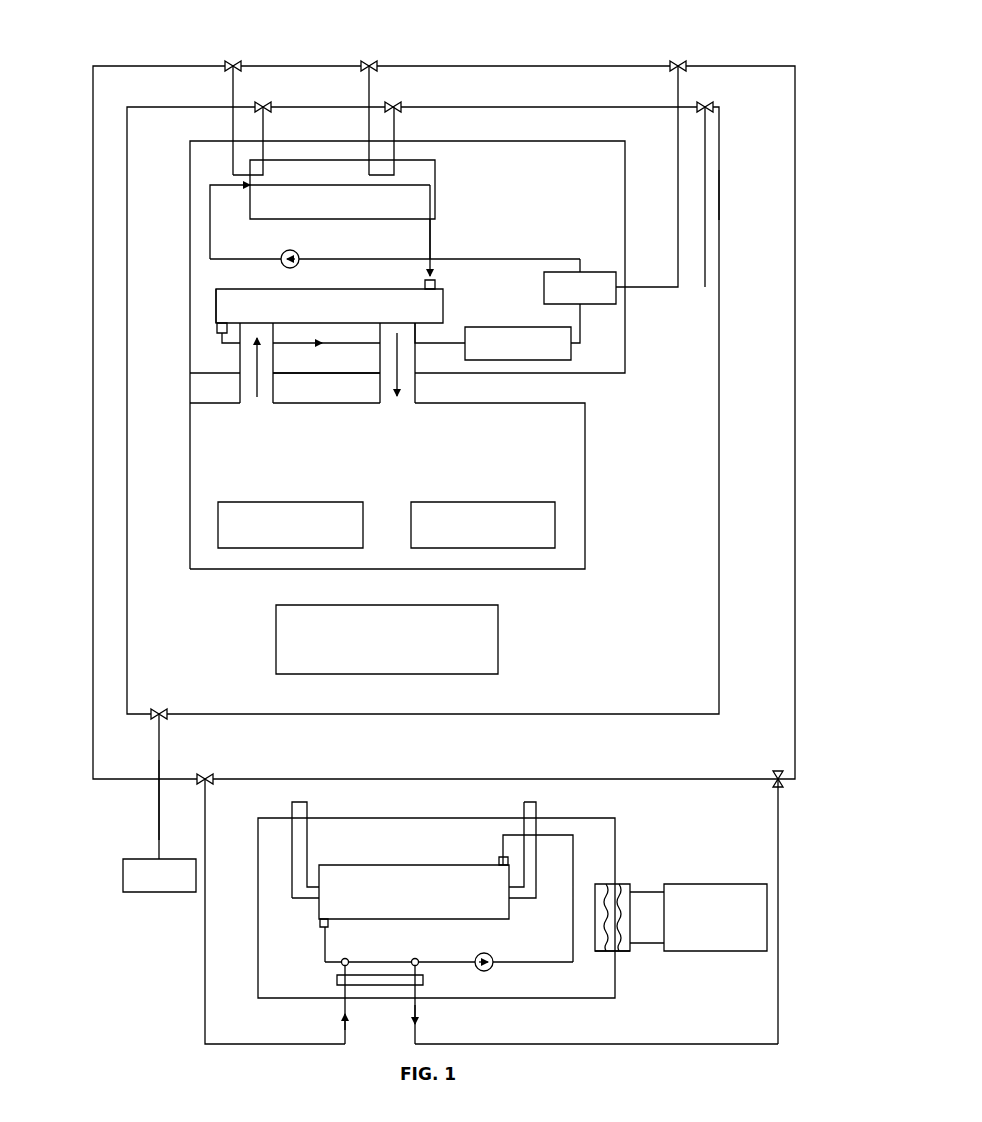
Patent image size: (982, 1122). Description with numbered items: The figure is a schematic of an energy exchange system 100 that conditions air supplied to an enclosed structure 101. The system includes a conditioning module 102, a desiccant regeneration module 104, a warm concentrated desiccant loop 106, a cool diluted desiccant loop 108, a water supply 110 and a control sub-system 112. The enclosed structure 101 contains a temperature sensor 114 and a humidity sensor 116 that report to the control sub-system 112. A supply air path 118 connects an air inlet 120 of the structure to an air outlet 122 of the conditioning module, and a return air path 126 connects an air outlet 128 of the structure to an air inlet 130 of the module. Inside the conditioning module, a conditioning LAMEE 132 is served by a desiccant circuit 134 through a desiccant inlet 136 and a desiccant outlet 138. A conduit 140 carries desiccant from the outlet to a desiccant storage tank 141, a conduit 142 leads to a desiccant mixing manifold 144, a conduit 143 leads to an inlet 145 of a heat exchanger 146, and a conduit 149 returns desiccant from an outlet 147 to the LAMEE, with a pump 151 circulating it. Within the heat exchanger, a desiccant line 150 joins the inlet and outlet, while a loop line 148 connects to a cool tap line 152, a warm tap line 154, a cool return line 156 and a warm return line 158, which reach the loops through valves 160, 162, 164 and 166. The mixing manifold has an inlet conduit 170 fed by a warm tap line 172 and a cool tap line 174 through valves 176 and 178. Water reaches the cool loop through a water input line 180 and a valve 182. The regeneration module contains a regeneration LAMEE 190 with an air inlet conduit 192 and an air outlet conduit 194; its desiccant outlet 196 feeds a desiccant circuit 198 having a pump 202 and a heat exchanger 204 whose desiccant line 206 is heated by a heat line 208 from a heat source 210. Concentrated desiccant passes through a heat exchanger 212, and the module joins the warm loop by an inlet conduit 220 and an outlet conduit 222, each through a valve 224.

The energy exchange system 100 is at (155, 52).
The enclosed structure 101 is at (407, 355).
The conditioning module 102 is at (395, 233).
The desiccant regeneration module 104 is at (436, 908).
The warm concentrated desiccant loop 106 is at (797, 742).
The cool diluted desiccant loop 108 is at (655, 717).
The water supply 110 is at (158, 893).
The control sub-system 112 is at (499, 640).
The temperature sensor 114 is at (290, 502).
The humidity sensor 116 is at (483, 502).
The supply air path 118 is at (420, 355).
The air inlet 120 is at (410, 405).
The air outlet 122 is at (415, 322).
The return air path 126 is at (240, 355).
The air outlet 128 is at (265, 405).
The air inlet 130 is at (258, 321).
The conditioning LAMEE 132 is at (329, 306).
The desiccant circuit 134 is at (357, 260).
The desiccant inlet 136 is at (440, 285).
The desiccant outlet 138 is at (217, 330).
The conduit 140 is at (313, 344).
The desiccant storage tank 141 is at (570, 361).
The conduit 142 is at (583, 322).
The conduit 143 is at (574, 258).
The desiccant mixing manifold 144 is at (587, 271).
The inlet 145 is at (243, 193).
The heat exchanger 146 is at (432, 224).
The outlet 147 is at (433, 228).
The loop line 148 is at (403, 187).
The conduit 149 is at (428, 234).
The desiccant line 150 is at (318, 186).
The pump 151 is at (296, 253).
The cool tap line 152 is at (262, 150).
The warm tap line 154 is at (233, 80).
The cool return line 156 is at (395, 145).
The warm return line 158 is at (368, 85).
The valve 160 is at (265, 104).
The valve 162 is at (233, 62).
The valve 164 is at (395, 104).
The valve 166 is at (369, 62).
The inlet conduit 170 is at (618, 289).
The warm tap line 172 is at (706, 145).
The cool tap line 174 is at (721, 186).
The valve 176 is at (678, 62).
The valve 178 is at (707, 104).
The water input line 180 is at (159, 745).
The valve 182 is at (160, 708).
The regeneration LAMEE 190 is at (412, 920).
The air inlet conduit 192 is at (307, 860).
The air outlet conduit 194 is at (537, 858).
The desiccant outlet 196 is at (320, 920).
The desiccant circuit 198 is at (345, 966).
The pump 202 is at (479, 957).
The heat exchanger 204 is at (632, 930).
The desiccant line 206 is at (610, 905).
The heat line 208 is at (499, 860).
The heat source 210 is at (718, 952).
The heat exchanger 212 is at (425, 985).
The inlet conduit 220 is at (205, 1000).
The outlet conduit 222 is at (780, 992).
The valve 224 is at (206, 775).